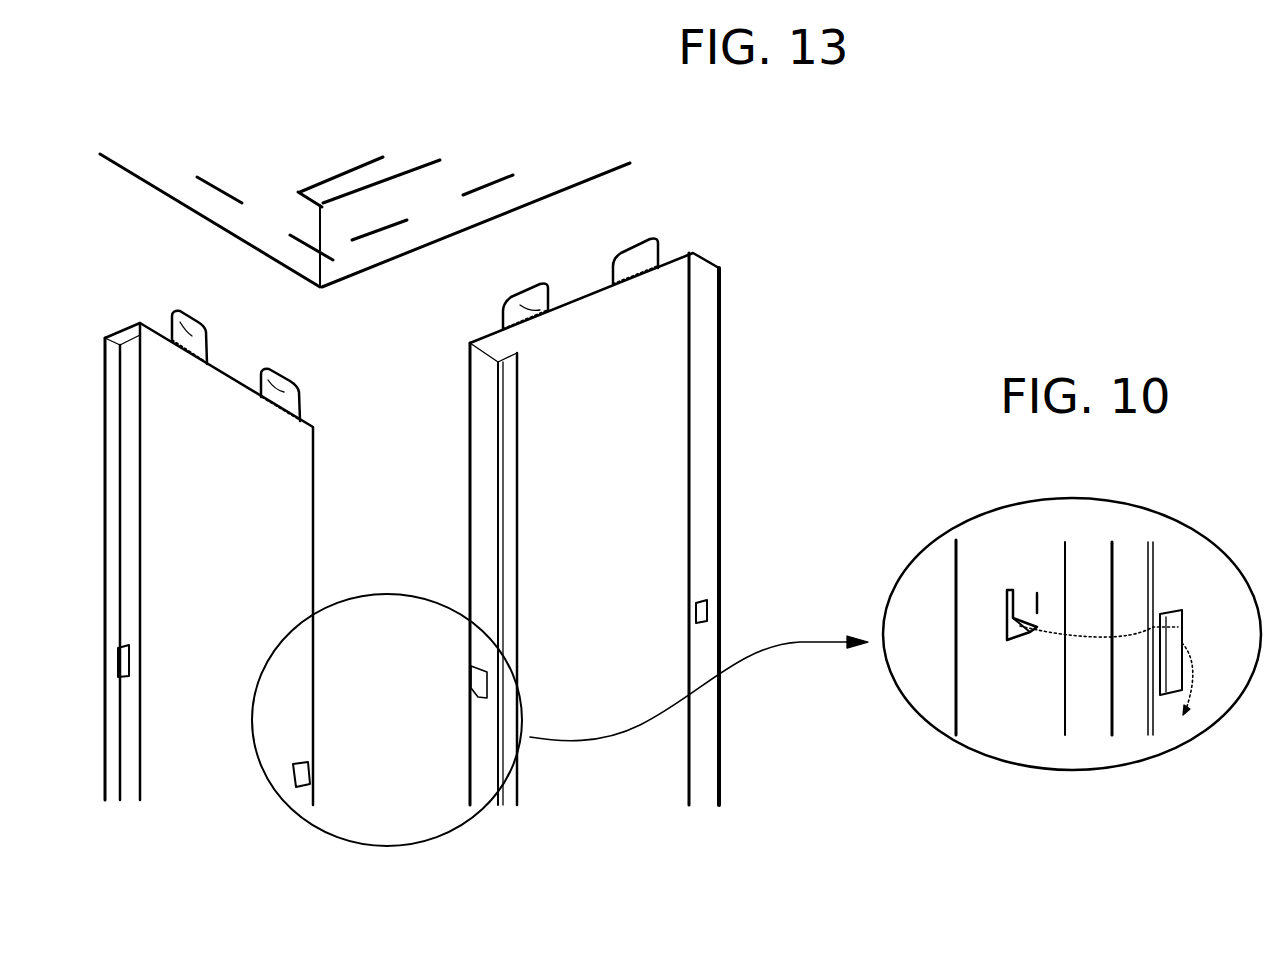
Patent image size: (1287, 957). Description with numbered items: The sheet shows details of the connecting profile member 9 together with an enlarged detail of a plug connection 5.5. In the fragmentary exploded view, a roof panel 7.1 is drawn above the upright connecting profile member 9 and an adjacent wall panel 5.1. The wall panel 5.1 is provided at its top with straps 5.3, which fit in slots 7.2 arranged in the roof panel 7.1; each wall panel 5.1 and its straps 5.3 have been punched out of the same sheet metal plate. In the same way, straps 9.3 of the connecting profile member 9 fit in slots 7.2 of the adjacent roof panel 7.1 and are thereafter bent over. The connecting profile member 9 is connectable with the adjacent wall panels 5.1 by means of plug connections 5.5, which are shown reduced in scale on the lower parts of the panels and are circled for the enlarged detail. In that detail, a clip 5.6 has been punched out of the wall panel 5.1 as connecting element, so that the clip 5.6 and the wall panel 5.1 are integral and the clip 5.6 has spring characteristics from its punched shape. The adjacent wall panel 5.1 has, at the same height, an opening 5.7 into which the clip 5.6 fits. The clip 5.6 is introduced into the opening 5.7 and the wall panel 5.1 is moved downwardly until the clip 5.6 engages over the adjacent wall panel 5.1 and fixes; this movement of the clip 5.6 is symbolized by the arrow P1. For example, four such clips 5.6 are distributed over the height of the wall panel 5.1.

In FIG. 13, the roof panel 7.1 is at (279, 185).
In FIG. 13, the slots 7.2 is at (497, 172).
In FIG. 13, the connecting profile member 9 is at (208, 730).
In FIG. 13, the straps 9.3 is at (283, 390).
In FIG. 13, the wall panel 5.1 is at (602, 415).
In FIG. 10, the wall panel 5.1 is at (993, 683).
In FIG. 13, the straps 5.3 is at (523, 308).
In FIG. 13, the plug connection 5.5 is at (470, 685).
In FIG. 10, the clip 5.6 is at (1030, 590).
In FIG. 10, the opening 5.7 is at (1172, 628).
In FIG. 10, the arrow P1 is at (1093, 638).